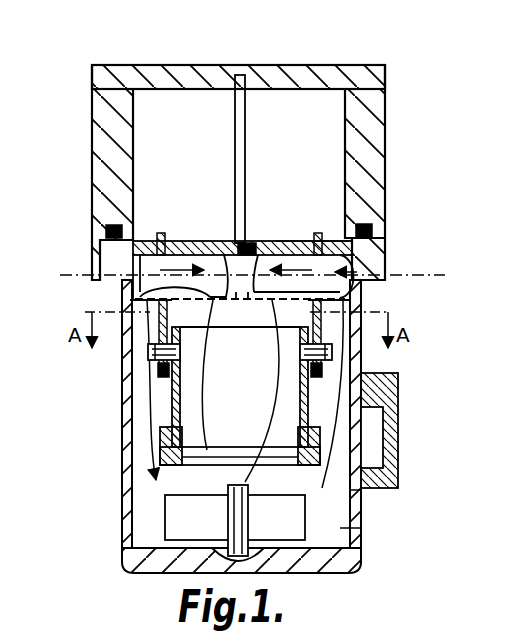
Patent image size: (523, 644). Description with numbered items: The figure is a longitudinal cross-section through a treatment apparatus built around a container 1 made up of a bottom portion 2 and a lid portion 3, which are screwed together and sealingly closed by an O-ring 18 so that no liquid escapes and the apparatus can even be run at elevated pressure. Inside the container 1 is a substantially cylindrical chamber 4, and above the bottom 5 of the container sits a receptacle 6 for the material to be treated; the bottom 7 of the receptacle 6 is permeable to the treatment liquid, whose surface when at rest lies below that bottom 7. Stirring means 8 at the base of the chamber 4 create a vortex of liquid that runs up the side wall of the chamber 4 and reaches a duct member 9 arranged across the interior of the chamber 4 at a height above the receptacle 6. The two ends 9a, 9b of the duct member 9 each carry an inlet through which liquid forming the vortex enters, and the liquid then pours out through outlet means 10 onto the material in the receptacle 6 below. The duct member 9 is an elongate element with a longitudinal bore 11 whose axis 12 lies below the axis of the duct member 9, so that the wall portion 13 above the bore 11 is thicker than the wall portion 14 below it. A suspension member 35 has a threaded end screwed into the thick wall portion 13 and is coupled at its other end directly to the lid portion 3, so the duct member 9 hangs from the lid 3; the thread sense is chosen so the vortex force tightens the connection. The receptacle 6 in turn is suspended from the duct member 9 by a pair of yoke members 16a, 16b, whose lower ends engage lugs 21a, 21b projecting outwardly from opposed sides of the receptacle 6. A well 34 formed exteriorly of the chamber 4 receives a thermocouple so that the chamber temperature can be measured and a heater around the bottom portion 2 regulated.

The container 1 is at (74, 73).
The bottom portion 2 is at (118, 455).
The lid portion 3 is at (385, 114).
The chamber 4 is at (355, 494).
The bottom 5 is at (340, 528).
The receptacle 6 is at (175, 400).
The bottom of the receptacle 7 is at (228, 488).
The stirring means 8 is at (290, 527).
The duct member 9 is at (290, 243).
The end of the duct member 9a is at (112, 238).
The end of the duct member 9b is at (365, 272).
The outlet means 10 is at (210, 240).
The longitudinal bore 11 is at (276, 248).
The axis of the bore 12 is at (118, 272).
The wall portion above the bore 13 is at (190, 240).
The wall portion below the bore 14 is at (165, 292).
The yoke member 16a is at (158, 355).
The yoke member 16b is at (320, 340).
The O-ring 18 is at (365, 224).
The lug 21a is at (164, 378).
The lug 21b is at (322, 352).
The well 34 is at (400, 440).
The suspension member 35 is at (246, 145).